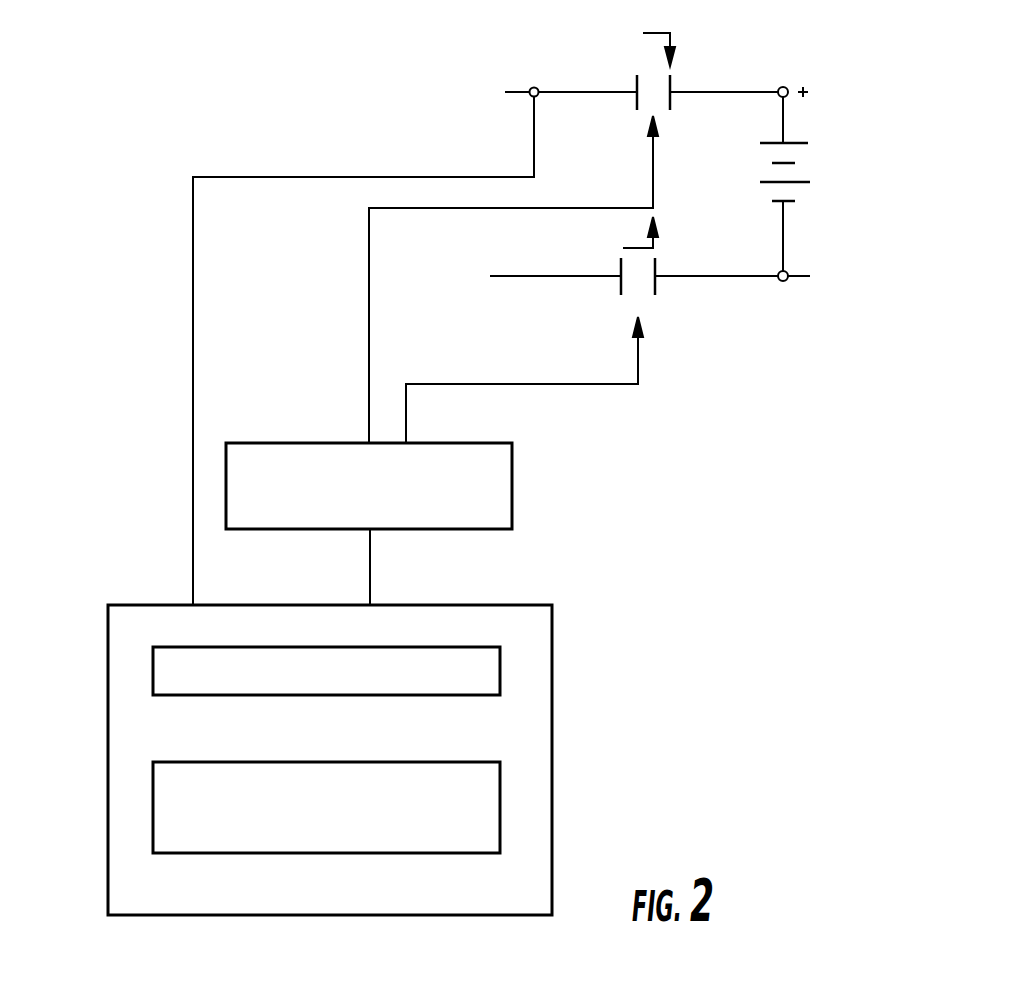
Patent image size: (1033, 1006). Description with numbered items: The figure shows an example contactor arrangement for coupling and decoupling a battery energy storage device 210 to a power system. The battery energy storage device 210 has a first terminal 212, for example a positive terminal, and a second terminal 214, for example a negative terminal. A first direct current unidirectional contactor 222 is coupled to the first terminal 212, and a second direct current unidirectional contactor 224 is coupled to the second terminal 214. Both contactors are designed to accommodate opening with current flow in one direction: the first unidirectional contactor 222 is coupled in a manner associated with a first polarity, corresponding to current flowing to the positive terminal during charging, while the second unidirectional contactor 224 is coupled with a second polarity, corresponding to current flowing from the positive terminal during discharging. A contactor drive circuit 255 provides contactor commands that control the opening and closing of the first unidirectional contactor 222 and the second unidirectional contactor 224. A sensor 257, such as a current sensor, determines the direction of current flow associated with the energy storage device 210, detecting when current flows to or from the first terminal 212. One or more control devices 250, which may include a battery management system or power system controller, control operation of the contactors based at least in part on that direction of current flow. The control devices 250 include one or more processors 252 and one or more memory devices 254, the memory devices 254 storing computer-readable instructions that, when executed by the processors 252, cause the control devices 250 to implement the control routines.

The battery energy storage device 210 is at (798, 142).
The first terminal 212 is at (783, 87).
The second terminal 214 is at (787, 282).
The first direct current unidirectional contactor 222 is at (637, 80).
The second direct current unidirectional contactor 224 is at (657, 283).
The control device 250 is at (530, 659).
The processor 252 is at (153, 677).
The memory device 254 is at (153, 803).
The contactor drive circuit 255 is at (500, 492).
The sensor 257 is at (534, 87).